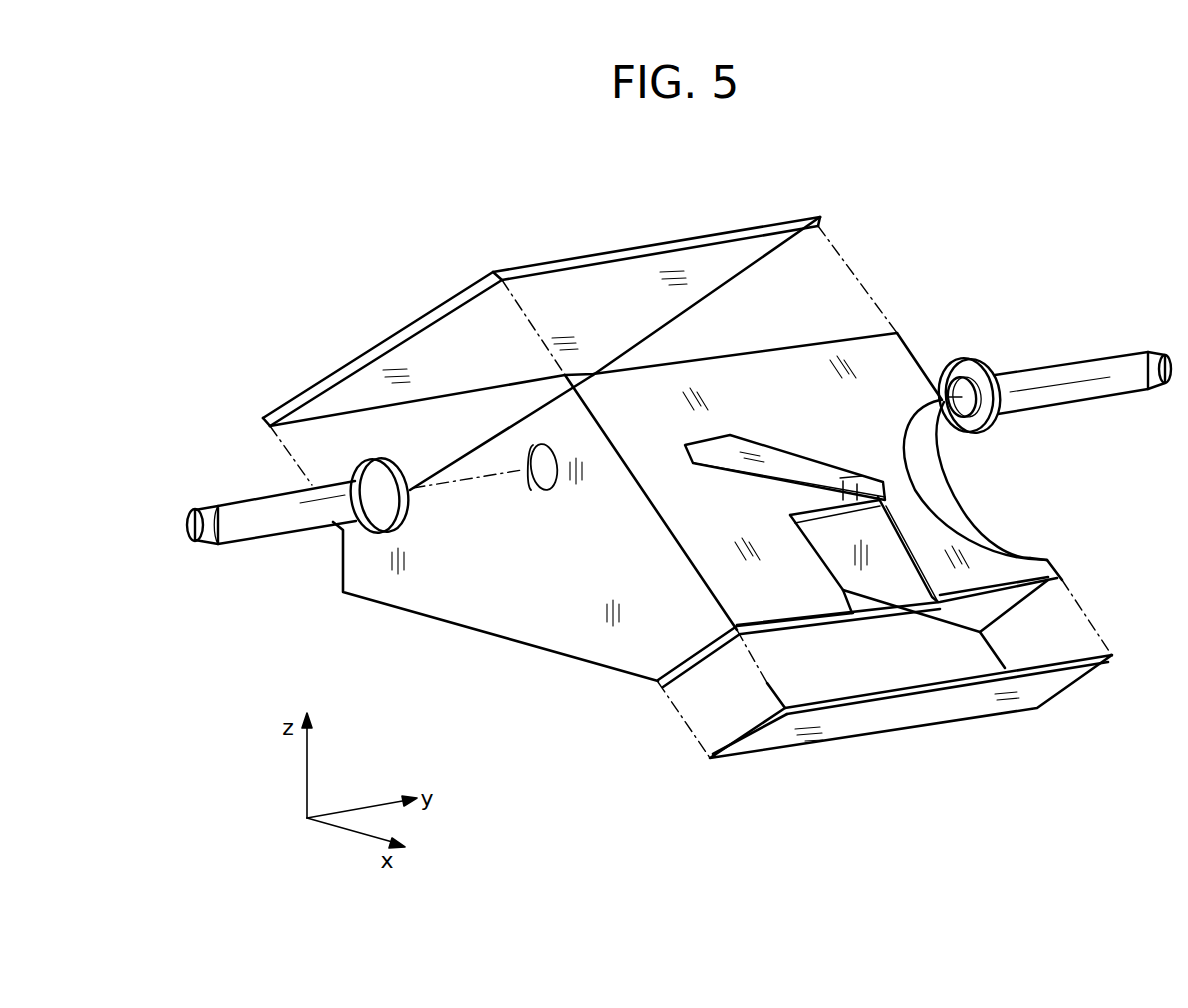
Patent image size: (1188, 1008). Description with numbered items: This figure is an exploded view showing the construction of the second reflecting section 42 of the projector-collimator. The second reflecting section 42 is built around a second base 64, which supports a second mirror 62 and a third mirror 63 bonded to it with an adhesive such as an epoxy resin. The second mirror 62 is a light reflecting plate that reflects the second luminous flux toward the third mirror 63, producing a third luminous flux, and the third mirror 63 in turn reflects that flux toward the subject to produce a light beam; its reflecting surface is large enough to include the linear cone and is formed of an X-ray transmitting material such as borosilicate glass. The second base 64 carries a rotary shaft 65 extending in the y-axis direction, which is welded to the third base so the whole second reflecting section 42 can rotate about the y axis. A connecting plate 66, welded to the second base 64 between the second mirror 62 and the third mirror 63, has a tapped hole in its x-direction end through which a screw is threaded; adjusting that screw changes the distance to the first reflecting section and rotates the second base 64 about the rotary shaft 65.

The second reflecting section 42 is at (845, 748).
The second mirror 62 is at (933, 730).
The third mirror 63 is at (677, 243).
The second base 64 is at (440, 590).
The rotary shaft 65 is at (272, 527).
The connecting plate 66 is at (832, 464).